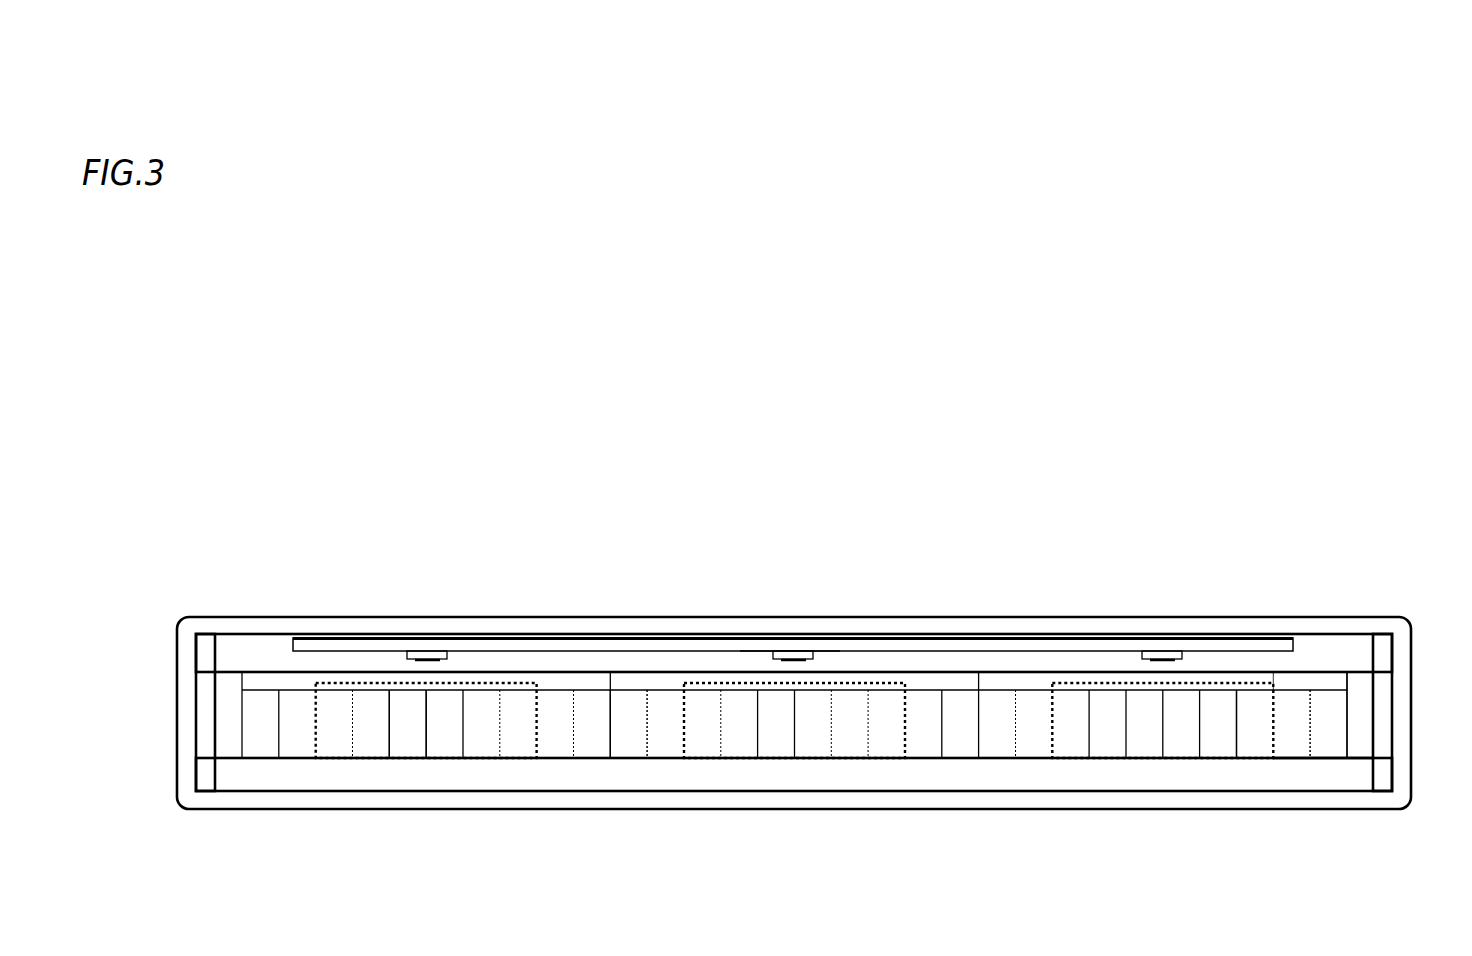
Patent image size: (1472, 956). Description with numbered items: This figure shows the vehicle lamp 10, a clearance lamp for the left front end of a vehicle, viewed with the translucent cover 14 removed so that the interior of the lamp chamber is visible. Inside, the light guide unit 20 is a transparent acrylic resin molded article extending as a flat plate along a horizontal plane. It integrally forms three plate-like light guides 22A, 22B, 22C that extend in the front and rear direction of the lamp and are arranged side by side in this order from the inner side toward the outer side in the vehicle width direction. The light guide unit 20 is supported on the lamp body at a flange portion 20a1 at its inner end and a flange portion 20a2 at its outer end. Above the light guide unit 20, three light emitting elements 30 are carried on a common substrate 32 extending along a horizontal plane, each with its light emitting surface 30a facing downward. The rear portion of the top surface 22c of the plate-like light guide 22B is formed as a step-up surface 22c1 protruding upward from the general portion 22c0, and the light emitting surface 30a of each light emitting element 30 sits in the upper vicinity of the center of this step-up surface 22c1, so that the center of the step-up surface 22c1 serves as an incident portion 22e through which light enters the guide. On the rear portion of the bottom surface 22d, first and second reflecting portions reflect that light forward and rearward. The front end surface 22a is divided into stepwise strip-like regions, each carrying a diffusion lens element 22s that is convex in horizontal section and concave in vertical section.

The vehicle lamp 10 is at (335, 375).
The translucent cover 14 is at (230, 617).
The light guide unit 20 is at (1040, 495).
The flange portion 20a1 is at (208, 725).
The flange portion 20a2 is at (1380, 728).
The plate-like light guide 22A is at (325, 672).
The plate-like light guide 22B is at (693, 672).
The plate-like light guide 22C is at (1060, 672).
The front end surface 22a is at (627, 747).
The top surface 22c is at (1410, 570).
The general portion 22c0 is at (1322, 693).
The step-up surface 22c1 is at (1250, 673).
The bottom surface 22d is at (1322, 763).
The incident portion 22e is at (777, 672).
The diffusion lens element 22s is at (408, 742).
The light emitting element 30 is at (425, 650).
The light emitting surface 30a is at (813, 665).
The substrate 32 is at (1087, 643).